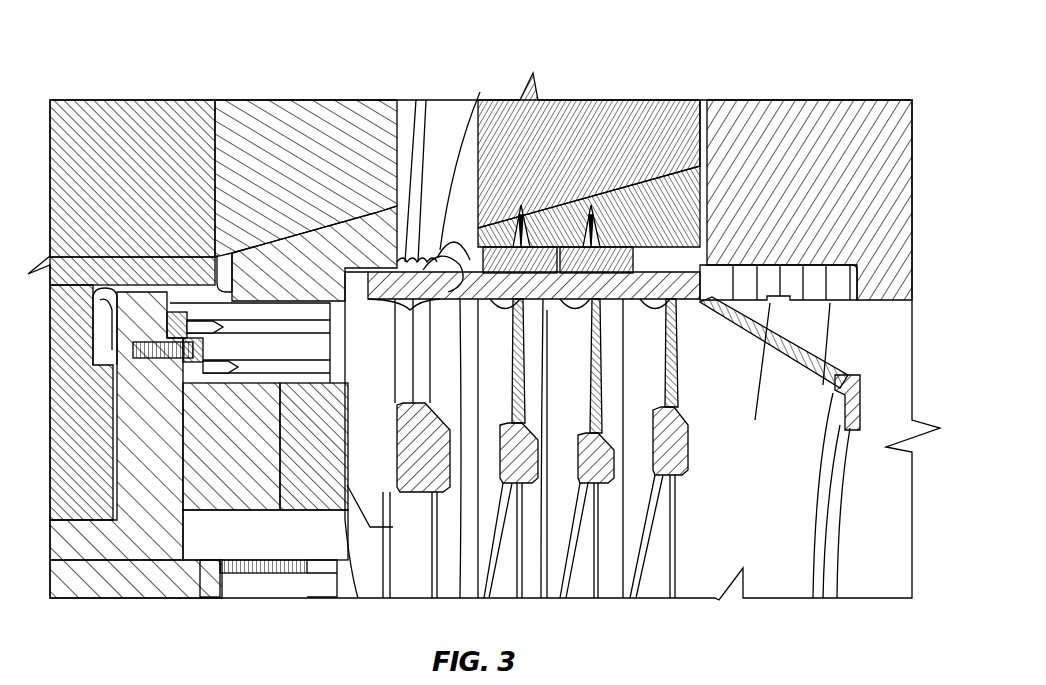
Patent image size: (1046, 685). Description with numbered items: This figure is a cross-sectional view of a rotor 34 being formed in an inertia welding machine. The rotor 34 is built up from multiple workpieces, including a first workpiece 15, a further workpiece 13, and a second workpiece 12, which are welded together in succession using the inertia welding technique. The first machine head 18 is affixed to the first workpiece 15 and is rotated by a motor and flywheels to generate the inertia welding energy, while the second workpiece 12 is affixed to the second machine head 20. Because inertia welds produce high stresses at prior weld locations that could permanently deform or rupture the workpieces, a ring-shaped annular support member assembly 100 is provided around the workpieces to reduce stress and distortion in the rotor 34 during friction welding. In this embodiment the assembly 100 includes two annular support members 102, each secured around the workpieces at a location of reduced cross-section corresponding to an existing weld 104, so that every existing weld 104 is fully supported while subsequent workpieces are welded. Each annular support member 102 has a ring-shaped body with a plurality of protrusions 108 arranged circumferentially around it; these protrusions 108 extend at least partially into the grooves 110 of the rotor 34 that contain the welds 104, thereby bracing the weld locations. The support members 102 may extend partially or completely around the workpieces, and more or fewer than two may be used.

The second workpiece 12 is at (427, 448).
The workpiece 13 is at (641, 455).
The first workpiece 15 is at (397, 268).
The first machine head 18 is at (238, 602).
The second machine head 20 is at (459, 190).
The rotor 34 is at (700, 268).
The annular support member assembly 100 is at (612, 200).
The annular support member 102 is at (590, 232).
The weld 104 is at (432, 270).
The protrusion 108 is at (579, 196).
The groove 110 is at (576, 448).